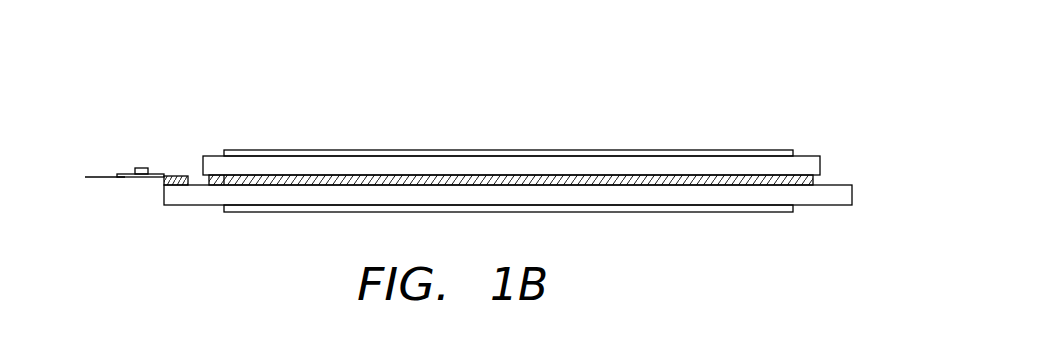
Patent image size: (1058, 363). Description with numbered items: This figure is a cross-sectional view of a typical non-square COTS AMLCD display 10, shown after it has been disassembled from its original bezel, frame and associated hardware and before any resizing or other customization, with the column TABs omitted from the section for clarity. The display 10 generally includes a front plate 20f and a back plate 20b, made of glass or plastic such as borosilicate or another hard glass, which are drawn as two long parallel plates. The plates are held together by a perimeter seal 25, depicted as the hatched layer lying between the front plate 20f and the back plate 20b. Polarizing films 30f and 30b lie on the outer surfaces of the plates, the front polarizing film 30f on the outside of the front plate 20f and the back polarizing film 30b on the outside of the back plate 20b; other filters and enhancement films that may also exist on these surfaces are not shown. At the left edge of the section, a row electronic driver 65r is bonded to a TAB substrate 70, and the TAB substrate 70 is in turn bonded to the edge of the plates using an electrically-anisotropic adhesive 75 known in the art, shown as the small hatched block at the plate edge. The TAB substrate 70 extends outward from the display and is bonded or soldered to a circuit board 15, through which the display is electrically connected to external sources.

The COTS AMLCD display 10 is at (523, 173).
The circuit board 15 is at (98, 177).
The front plate 20f is at (813, 160).
The back plate 20b is at (853, 195).
The perimeter seal 25 is at (772, 180).
The front polarizing film 30f is at (770, 150).
The back polarizing film 30b is at (738, 212).
The row electronic driver 65r is at (142, 168).
The TAB substrate 70 is at (157, 178).
The electrically-anisotropic adhesive 75 is at (177, 176).